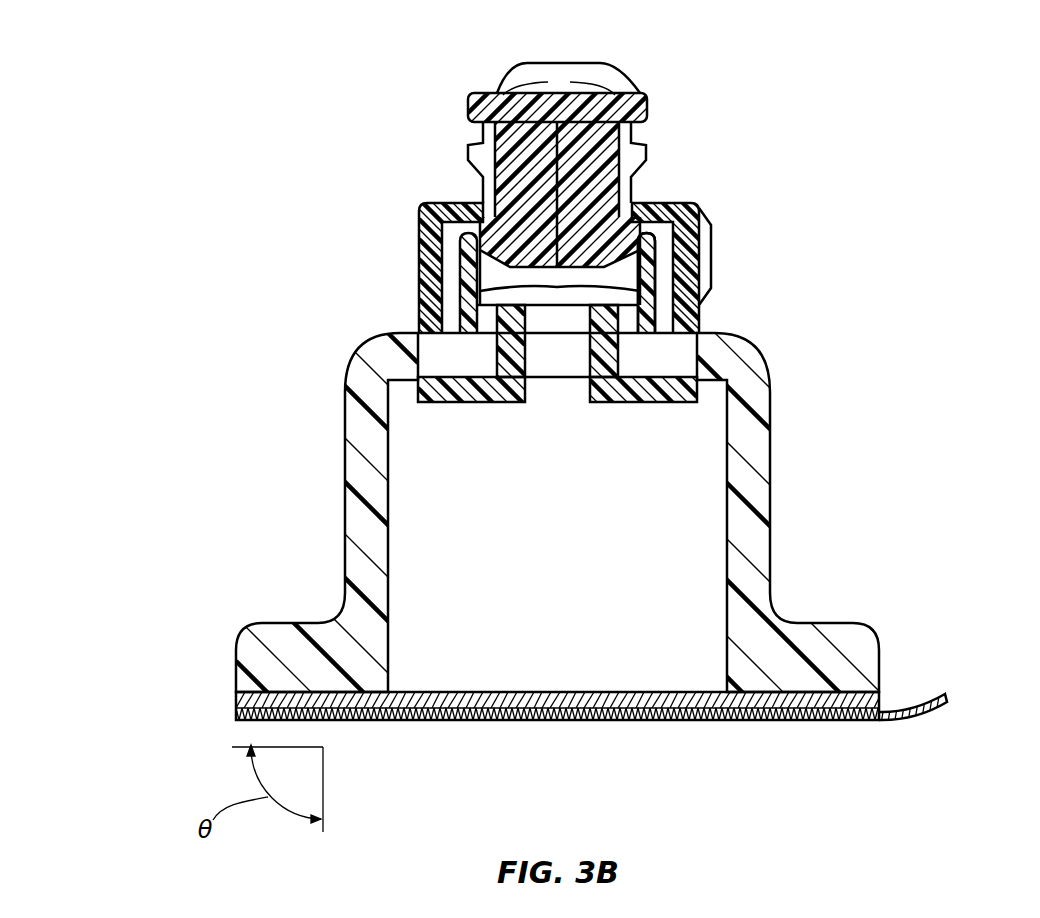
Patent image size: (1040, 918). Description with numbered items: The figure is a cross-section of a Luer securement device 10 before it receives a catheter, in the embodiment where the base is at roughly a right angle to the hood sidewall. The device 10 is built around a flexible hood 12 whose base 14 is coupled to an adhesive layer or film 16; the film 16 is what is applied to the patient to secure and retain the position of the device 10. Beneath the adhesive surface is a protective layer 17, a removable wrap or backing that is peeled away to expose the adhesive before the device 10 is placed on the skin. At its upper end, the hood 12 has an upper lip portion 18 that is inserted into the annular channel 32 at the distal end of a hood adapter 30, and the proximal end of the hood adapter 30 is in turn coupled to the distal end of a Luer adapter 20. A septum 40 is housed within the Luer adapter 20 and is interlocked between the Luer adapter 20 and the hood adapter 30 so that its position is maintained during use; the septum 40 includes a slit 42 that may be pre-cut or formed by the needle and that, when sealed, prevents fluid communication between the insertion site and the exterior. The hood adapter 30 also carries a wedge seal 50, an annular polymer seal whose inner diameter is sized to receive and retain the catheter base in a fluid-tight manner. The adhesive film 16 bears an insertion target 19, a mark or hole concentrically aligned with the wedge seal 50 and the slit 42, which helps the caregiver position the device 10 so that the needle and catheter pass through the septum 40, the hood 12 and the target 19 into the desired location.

The Luer securement device 10 is at (806, 152).
The flexible hood 12 is at (771, 548).
The base 14 is at (242, 645).
The adhesive layer or film 16 is at (646, 718).
The protective layer 17 is at (897, 718).
The upper lip portion 18 is at (418, 333).
The insertion target 19 is at (533, 718).
The Luer adapter 20 is at (419, 248).
The hood adapter 30 is at (699, 323).
The annular channel 32 is at (638, 350).
The septum 40 is at (487, 92).
The slit 42 is at (577, 138).
The wedge seal 50 is at (595, 345).